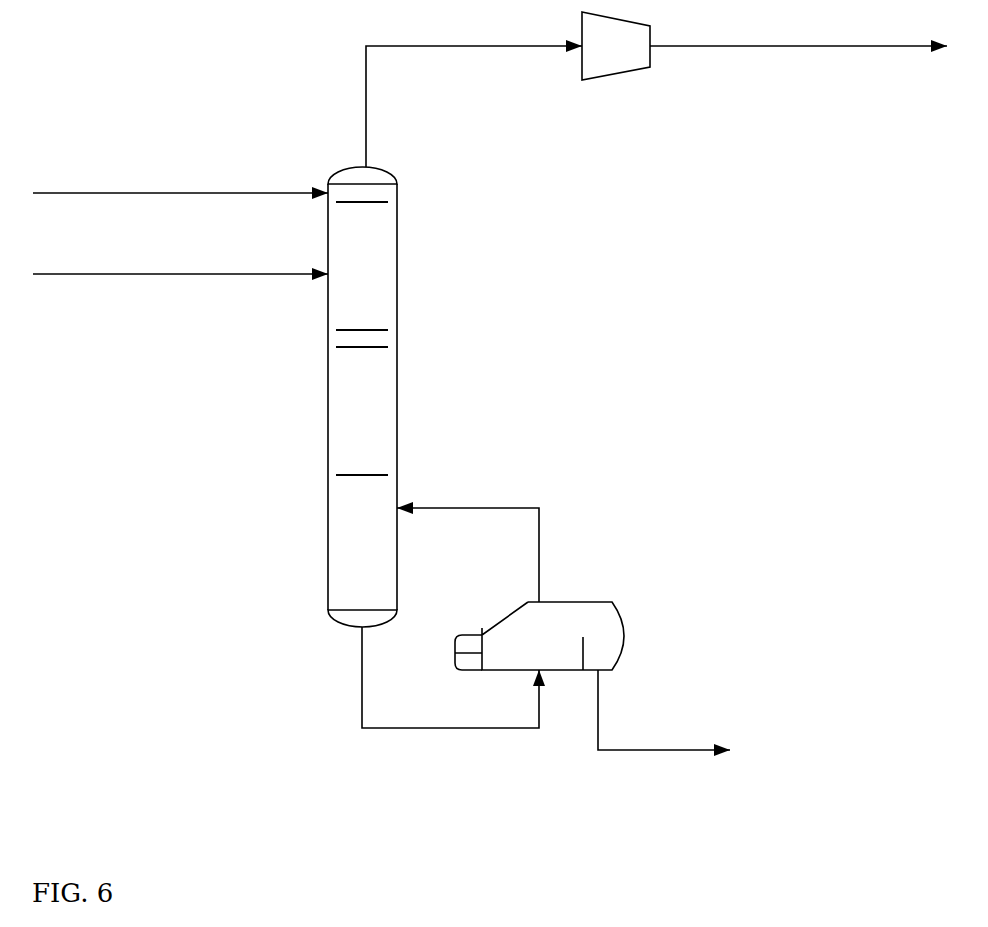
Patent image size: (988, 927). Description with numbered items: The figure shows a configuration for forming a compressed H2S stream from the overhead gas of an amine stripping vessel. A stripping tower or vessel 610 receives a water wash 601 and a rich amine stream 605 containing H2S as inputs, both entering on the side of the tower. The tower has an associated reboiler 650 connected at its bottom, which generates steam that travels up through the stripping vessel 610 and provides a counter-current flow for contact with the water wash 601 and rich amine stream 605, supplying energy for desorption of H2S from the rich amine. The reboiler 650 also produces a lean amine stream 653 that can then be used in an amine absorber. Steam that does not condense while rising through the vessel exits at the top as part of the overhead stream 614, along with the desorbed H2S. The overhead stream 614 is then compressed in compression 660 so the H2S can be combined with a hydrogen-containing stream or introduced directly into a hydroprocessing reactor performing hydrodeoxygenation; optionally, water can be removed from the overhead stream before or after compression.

The water wash 601 is at (173, 183).
The rich amine stream 605 is at (189, 287).
The stripping tower 610 is at (412, 386).
The overhead stream 614 is at (397, 63).
The compression 660 is at (610, 93).
The reboiler 650 is at (633, 595).
The lean amine stream 653 is at (658, 735).